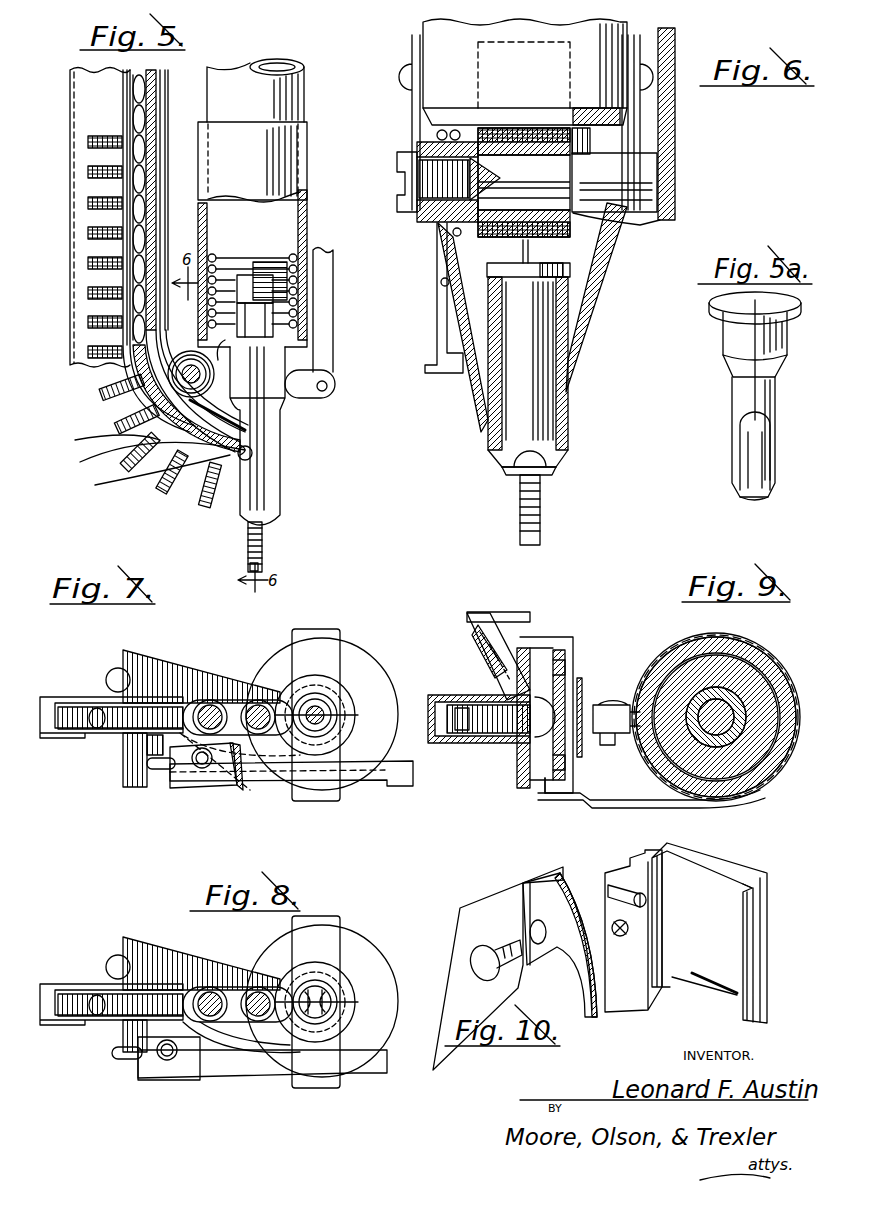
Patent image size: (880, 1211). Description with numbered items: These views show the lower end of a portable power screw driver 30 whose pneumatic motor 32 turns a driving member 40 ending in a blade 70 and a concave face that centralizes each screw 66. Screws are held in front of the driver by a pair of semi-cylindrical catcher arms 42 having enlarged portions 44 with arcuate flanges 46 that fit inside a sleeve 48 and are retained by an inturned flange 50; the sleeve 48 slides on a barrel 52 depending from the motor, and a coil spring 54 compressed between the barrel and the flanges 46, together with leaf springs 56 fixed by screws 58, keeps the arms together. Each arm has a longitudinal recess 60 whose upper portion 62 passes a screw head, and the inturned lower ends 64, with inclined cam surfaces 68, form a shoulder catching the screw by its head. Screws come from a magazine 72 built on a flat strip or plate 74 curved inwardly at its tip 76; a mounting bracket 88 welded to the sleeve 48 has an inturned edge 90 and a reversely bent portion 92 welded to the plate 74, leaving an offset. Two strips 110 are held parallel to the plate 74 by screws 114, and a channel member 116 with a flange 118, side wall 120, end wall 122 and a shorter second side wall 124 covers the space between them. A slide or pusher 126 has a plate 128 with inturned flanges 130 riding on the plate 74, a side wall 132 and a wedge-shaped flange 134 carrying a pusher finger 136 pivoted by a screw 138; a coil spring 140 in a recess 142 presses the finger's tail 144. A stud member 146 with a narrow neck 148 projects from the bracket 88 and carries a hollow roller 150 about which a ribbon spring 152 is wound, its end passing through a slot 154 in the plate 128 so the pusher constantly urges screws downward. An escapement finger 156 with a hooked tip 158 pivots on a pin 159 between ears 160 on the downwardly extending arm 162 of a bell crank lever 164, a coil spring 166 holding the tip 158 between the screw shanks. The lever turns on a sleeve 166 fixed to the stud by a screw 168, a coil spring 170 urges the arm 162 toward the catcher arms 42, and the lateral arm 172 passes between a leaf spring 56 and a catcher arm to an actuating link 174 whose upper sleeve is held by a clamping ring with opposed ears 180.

In FIG. 5, the portable power screw driver 30 is at (314, 96).
In FIG. 7, the pneumatic motor 32 is at (345, 665).
In FIG. 9, the pneumatic motor 32 is at (672, 690).
In FIG. 8, the pneumatic motor 32 is at (322, 983).
In FIG. 5, the driving member 40 is at (262, 450).
In FIG. 6, the driving member 40 is at (545, 400).
In FIG. 7, the driving member 40 is at (330, 690).
In FIG. 8, the driving member 40 is at (341, 974).
In FIG. 6, the catcher arms 42 is at (495, 460).
In FIG. 5a, the catcher arms 42 is at (760, 403).
In FIG. 7, the catcher arms 42 is at (330, 700).
In FIG. 8, the catcher arms 42 is at (348, 965).
In FIG. 5, the enlarged portions 44 is at (273, 322).
In FIG. 5a, the enlarged portions 44 is at (745, 336).
In FIG. 5, the arcuate flanges 46 is at (275, 290).
In FIG. 5a, the arcuate flanges 46 is at (745, 298).
In FIG. 5, the sleeve 48 is at (312, 222).
In FIG. 5, the inturned flange 50 is at (222, 342).
In FIG. 5, the barrel 52 is at (238, 82).
In FIG. 6, the barrel 52 is at (600, 30).
In FIG. 5, the coil spring 54 is at (300, 262).
In FIG. 5, the leaf springs 56 is at (345, 390).
In FIG. 6, the leaf springs 56 is at (610, 272).
In FIG. 7, the leaf springs 56 is at (318, 660).
In FIG. 8, the leaf springs 56 is at (328, 969).
In FIG. 6, the screws 58 is at (410, 60).
In FIG. 5, the longitudinally recessed portion 60 is at (236, 505).
In FIG. 5a, the longitudinally recessed portion 60 is at (752, 462).
In FIG. 7, the longitudinally recessed portion 60 is at (300, 700).
In FIG. 8, the longitudinally recessed portion 60 is at (313, 998).
In FIG. 5, the upper portion of aperture 62 is at (245, 452).
In FIG. 5a, the upper portion of aperture 62 is at (748, 438).
In FIG. 6, the inturned lower ends 64 is at (508, 476).
In FIG. 5a, the inturned lower ends 64 is at (750, 495).
In FIG. 5, the screw elements 66 is at (248, 548).
In FIG. 6, the screw elements 66 is at (542, 510).
In FIG. 7, the screw elements 66 is at (210, 705).
In FIG. 9, the screw elements 66 is at (460, 715).
In FIG. 8, the screw elements 66 is at (256, 953).
In FIG. 6, the inclined cam surfaces 68 is at (522, 465).
In FIG. 6, the blade 70 is at (557, 478).
In FIG. 8, the blade 70 is at (319, 1072).
In FIG. 5, the magazine 72 is at (110, 183).
In FIG. 7, the magazine 72 is at (98, 800).
In FIG. 9, the magazine 72 is at (532, 798).
In FIG. 8, the magazine 72 is at (106, 982).
In FIG. 5, the strip or plate 74 is at (162, 95).
In FIG. 7, the strip or plate 74 is at (170, 660).
In FIG. 9, the strip or plate 74 is at (562, 680).
In FIG. 8, the strip or plate 74 is at (199, 934).
In FIG. 5, the curved lower end 76 is at (190, 430).
In FIG. 5, the mounting plate or bracket 88 is at (190, 176).
In FIG. 6, the mounting plate or bracket 88 is at (675, 133).
In FIG. 9, the mounting plate or bracket 88 is at (608, 800).
In FIG. 9, the inturned portion 90 is at (545, 800).
In FIG. 9, the reversely bent portion 92 is at (560, 788).
In FIG. 5, the strips or plates 110 is at (128, 124).
In FIG. 7, the strips or plates 110 is at (120, 738).
In FIG. 9, the strips or plates 110 is at (482, 738).
In FIG. 8, the strips or plates 110 is at (120, 1015).
In FIG. 7, the screws 114 is at (115, 668).
In FIG. 8, the screws 114 is at (114, 933).
In FIG. 5, the channel member 116 is at (60, 237).
In FIG. 7, the channel member 116 is at (54, 683).
In FIG. 9, the channel member 116 is at (456, 758).
In FIG. 8, the channel member 116 is at (54, 933).
In FIG. 7, the laterally extending flange 118 is at (126, 652).
In FIG. 9, the laterally extending flange 118 is at (518, 770).
In FIG. 8, the laterally extending flange 118 is at (201, 931).
In FIG. 5, the side wall 120 is at (85, 88).
In FIG. 7, the side wall 120 is at (84, 700).
In FIG. 9, the side wall 120 is at (500, 748).
In FIG. 8, the side wall 120 is at (63, 962).
In FIG. 7, the end wall 122 is at (70, 745).
In FIG. 9, the end wall 122 is at (430, 695).
In FIG. 8, the end wall 122 is at (111, 1021).
In FIG. 7, the second side wall 124 is at (90, 760).
In FIG. 9, the second side wall 124 is at (470, 698).
In FIG. 8, the second side wall 124 is at (70, 1066).
In FIG. 9, the slide or pusher 126 is at (552, 620).
In FIG. 10, the slide or pusher 126 is at (615, 1020).
In FIG. 9, the flat plate 128 is at (582, 705).
In FIG. 10, the flat plate 128 is at (745, 872).
In FIG. 9, the inturned longitudinal flanges 130 is at (566, 655).
In FIG. 10, the inturned longitudinal flanges 130 is at (665, 935).
In FIG. 9, the side wall 132 is at (573, 640).
In FIG. 10, the side wall 132 is at (643, 858).
In FIG. 9, the wedge shaped flange 134 is at (510, 630).
In FIG. 10, the wedge shaped flange 134 is at (635, 1000).
In FIG. 9, the pusher finger 136 is at (490, 612).
In FIG. 10, the pusher finger 136 is at (560, 968).
In FIG. 9, the screw 138 is at (478, 640).
In FIG. 10, the screw 138 is at (490, 946).
In FIG. 9, the coil spring 140 is at (480, 622).
In FIG. 10, the coil spring 140 is at (605, 884).
In FIG. 10, the recess 142 is at (748, 884).
In FIG. 9, the flange or tail 144 is at (540, 612).
In FIG. 10, the flange or tail 144 is at (510, 920).
In FIG. 5, the stud member 146 is at (168, 392).
In FIG. 6, the stud member 146 is at (660, 210).
In FIG. 6, the narrow neck 148 is at (660, 170).
In FIG. 5, the sleeve or hollow roller 150 is at (140, 372).
In FIG. 5, the spring 152 is at (160, 152).
In FIG. 6, the spring 152 is at (508, 140).
In FIG. 10, the transverse slot 154 is at (740, 995).
In FIG. 5, the finger 156 is at (350, 400).
In FIG. 7, the finger 156 is at (235, 770).
In FIG. 8, the finger 156 is at (241, 1081).
In FIG. 5, the hook-shaped tip 158 is at (215, 490).
In FIG. 7, the hook-shaped tip 158 is at (255, 690).
In FIG. 8, the hook-shaped tip 158 is at (238, 960).
In FIG. 7, the pin 159 is at (202, 770).
In FIG. 8, the pin 159 is at (173, 1081).
In FIG. 5, the ears 160 is at (160, 455).
In FIG. 6, the ears 160 is at (555, 120).
In FIG. 7, the ears 160 is at (190, 770).
In FIG. 8, the ears 160 is at (169, 1099).
In FIG. 5, the downwardly extending arm 162 is at (330, 370).
In FIG. 8, the downwardly extending arm 162 is at (117, 1126).
In FIG. 5, the bell crank lever 164 is at (285, 352).
In FIG. 7, the bell crank lever 164 is at (340, 770).
In FIG. 8, the bell crank lever 164 is at (262, 1112).
In FIG. 6, the coil spring 166 is at (420, 140).
In FIG. 7, the coil spring 166 is at (160, 770).
In FIG. 8, the coil spring 166 is at (121, 1096).
In FIG. 6, the screw 168 is at (420, 156).
In FIG. 6, the coil spring 170 is at (455, 130).
In FIG. 5, the laterally extending arm 172 is at (265, 445).
In FIG. 5, the actuating link 174 is at (340, 300).
In FIG. 6, the actuating link 174 is at (340, 300).
In FIG. 9, the ears 180 is at (648, 700).